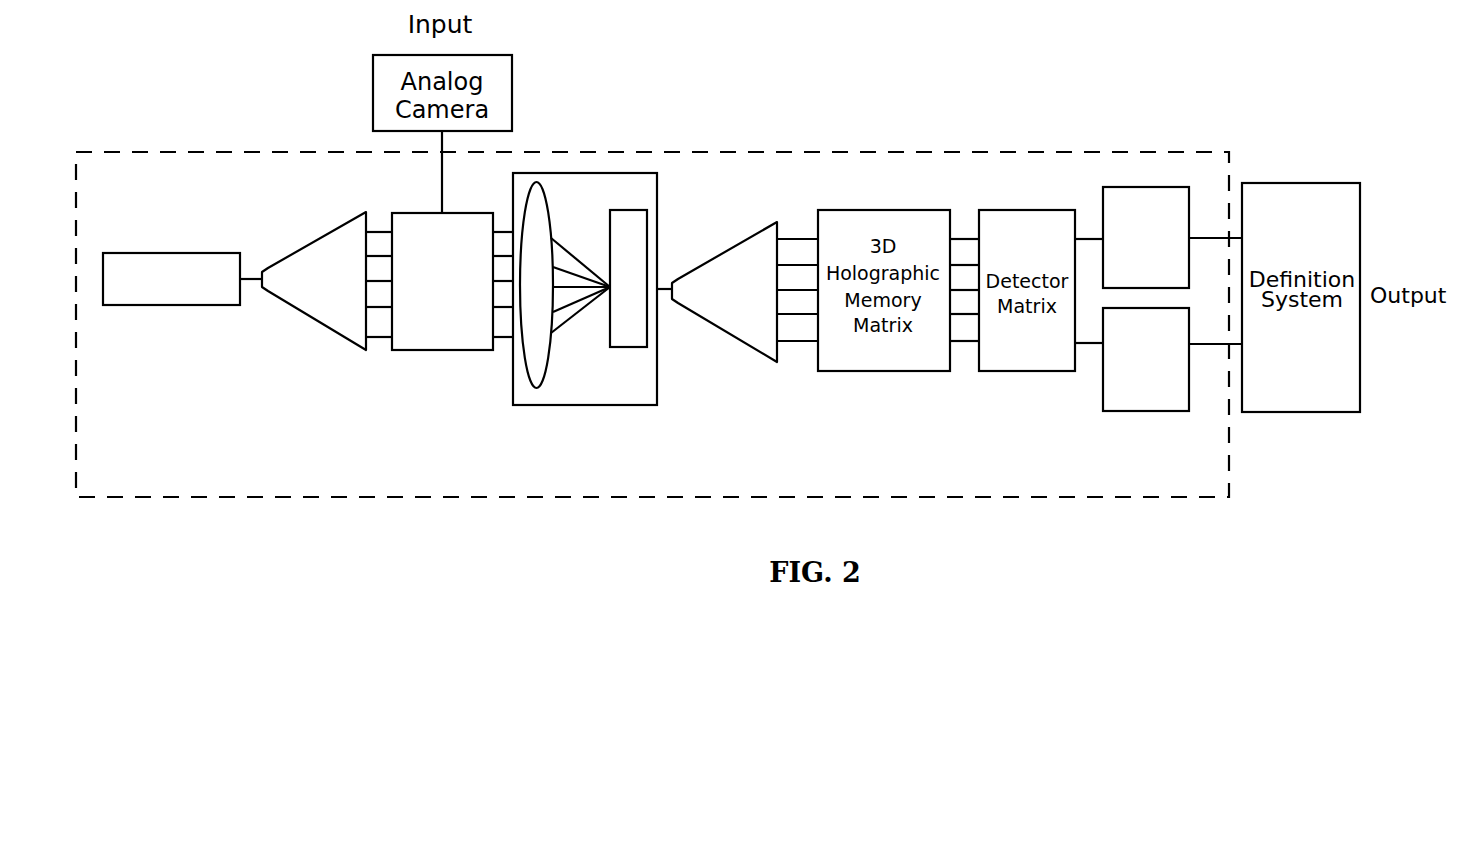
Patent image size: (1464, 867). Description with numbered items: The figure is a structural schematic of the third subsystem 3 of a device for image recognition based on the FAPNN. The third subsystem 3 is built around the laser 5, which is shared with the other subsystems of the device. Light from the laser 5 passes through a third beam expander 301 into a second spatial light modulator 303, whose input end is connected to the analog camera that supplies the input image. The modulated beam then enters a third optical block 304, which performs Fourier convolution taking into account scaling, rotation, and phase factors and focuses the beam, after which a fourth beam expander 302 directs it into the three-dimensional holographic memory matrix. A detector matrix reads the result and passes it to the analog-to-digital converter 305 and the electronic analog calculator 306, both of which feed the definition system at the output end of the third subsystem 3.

The third subsystem 3 is at (652, 324).
The laser 5 is at (182, 279).
The third beam expander 301 is at (327, 281).
The fourth beam expander 302 is at (745, 292).
The second spatial light modulator 303 is at (452, 281).
The third optical block 304 is at (592, 289).
The analog-to-digital converter 305 is at (1172, 237).
The electronic analog calculator 306 is at (1172, 359).